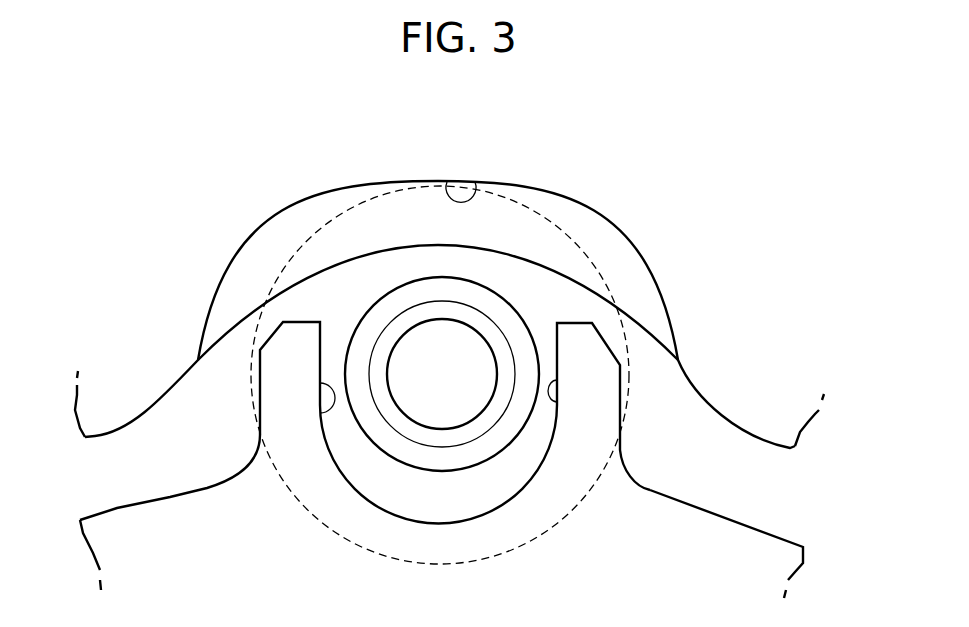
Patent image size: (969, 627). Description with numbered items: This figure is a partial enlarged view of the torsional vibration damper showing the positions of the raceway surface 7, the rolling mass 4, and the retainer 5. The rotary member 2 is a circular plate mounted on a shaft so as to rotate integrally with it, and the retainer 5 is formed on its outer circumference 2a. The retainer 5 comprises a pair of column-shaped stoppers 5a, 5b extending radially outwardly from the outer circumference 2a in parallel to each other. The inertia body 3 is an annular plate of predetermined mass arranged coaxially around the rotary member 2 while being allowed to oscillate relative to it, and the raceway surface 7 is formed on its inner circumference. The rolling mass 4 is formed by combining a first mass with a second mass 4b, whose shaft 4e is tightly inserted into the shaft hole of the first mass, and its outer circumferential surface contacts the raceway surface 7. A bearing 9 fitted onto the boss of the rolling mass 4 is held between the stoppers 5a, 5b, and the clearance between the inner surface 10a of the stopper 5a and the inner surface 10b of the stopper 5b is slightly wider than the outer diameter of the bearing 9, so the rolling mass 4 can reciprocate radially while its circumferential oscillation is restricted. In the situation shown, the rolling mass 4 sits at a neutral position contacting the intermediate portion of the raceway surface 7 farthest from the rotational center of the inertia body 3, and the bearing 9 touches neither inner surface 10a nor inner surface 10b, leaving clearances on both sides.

The rotary member 2 is at (441, 516).
The outer circumference 2a is at (767, 523).
The inertia body 3 is at (787, 417).
The rolling mass 4 is at (476, 400).
The second mass 4b is at (598, 260).
The shaft 4e is at (465, 404).
The retainer 5 is at (482, 388).
The stopper 5a is at (285, 390).
The stopper 5b is at (600, 397).
The raceway surface 7 is at (473, 181).
The bearing 9 is at (460, 457).
The inner surface 10a is at (323, 418).
The inner surface 10b is at (557, 378).